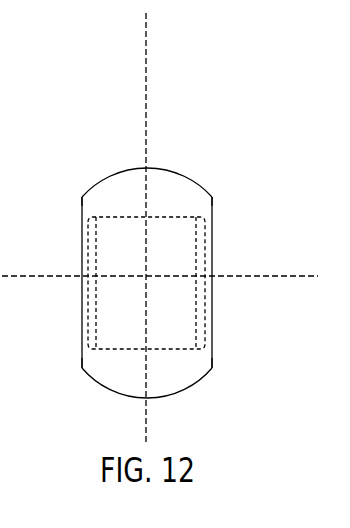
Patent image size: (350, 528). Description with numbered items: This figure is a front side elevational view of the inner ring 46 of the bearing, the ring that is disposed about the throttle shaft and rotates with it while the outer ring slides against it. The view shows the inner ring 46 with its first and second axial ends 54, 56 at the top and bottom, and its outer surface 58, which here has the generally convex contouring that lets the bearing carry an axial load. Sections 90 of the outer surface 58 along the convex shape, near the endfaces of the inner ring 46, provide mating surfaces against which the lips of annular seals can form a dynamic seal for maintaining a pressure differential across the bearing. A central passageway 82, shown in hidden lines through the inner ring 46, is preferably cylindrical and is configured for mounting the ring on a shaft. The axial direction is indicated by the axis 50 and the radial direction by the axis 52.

The inner ring 46 is at (204, 170).
The axis 50 is at (46, 281).
The axis 52 is at (148, 57).
The first axial end 54 is at (83, 362).
The second axial end 56 is at (210, 362).
The outer surface 58 is at (151, 182).
The central passageway 82 is at (216, 283).
The sections 90 is at (83, 196).